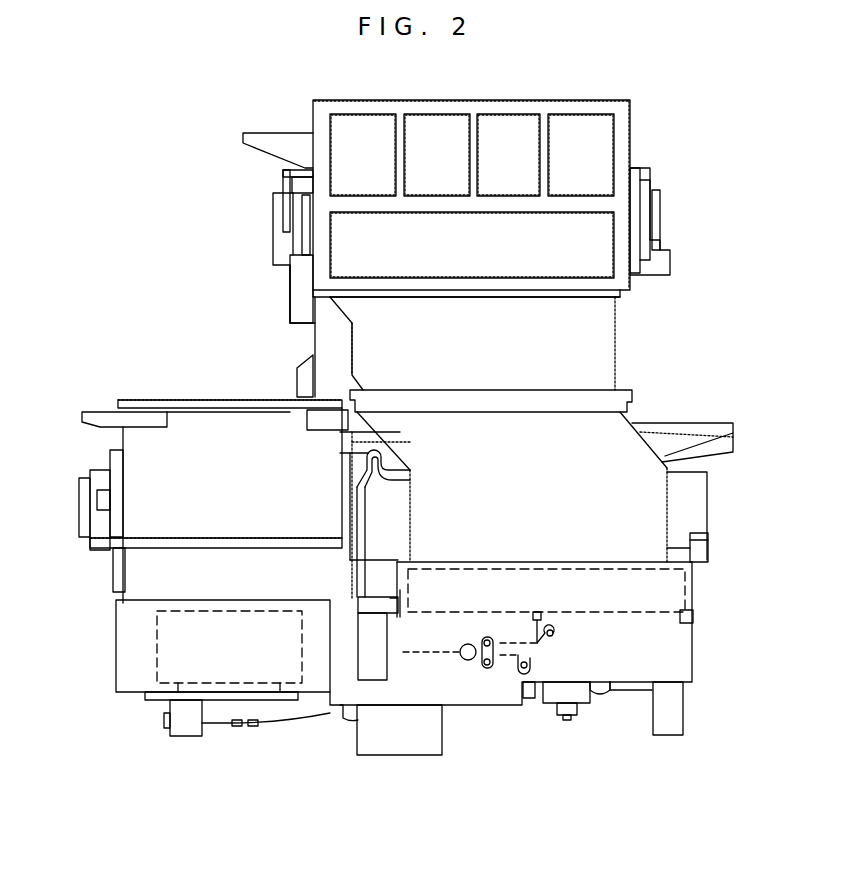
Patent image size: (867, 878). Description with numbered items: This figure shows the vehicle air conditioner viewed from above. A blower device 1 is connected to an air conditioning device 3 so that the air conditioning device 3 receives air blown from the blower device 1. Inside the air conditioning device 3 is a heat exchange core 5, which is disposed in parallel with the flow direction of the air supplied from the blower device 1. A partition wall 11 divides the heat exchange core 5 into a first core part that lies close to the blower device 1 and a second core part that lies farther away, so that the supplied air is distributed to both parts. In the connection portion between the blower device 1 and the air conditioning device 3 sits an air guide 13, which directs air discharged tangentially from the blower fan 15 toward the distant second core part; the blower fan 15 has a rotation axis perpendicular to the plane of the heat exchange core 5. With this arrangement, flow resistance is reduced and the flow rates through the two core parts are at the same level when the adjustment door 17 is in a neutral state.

The blower device 1 is at (115, 763).
The air conditioning device 3 is at (370, 787).
The heat exchange core 5 is at (686, 590).
The partition wall 11 is at (542, 653).
The air guide 13 is at (363, 632).
The blower fan 15 is at (157, 645).
The adjustment door 17 is at (440, 655).